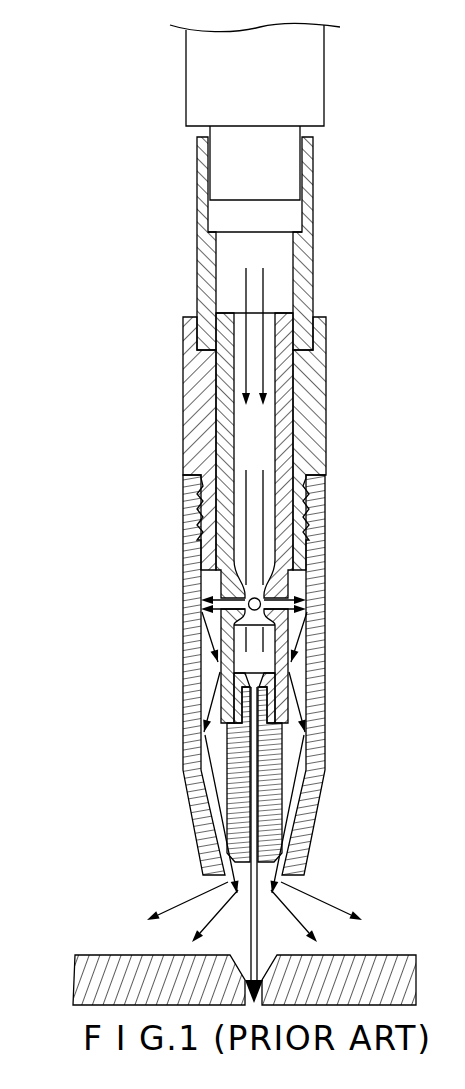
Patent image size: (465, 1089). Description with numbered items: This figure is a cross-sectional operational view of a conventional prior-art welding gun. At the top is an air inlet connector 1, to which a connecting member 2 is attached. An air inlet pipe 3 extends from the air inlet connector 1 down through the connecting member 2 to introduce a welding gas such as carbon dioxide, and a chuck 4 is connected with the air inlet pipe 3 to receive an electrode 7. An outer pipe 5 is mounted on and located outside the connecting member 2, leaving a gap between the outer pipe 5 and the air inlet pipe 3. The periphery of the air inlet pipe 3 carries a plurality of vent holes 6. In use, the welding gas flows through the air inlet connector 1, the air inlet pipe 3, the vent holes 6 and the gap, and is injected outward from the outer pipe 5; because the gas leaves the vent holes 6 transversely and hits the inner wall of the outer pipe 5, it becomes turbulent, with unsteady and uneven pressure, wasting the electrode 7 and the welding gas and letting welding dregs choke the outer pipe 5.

The air inlet connector 1 is at (197, 226).
The connecting member 2 is at (190, 379).
The air inlet pipe 3 is at (227, 454).
The chuck 4 is at (238, 740).
The outer pipe 5 is at (186, 620).
The vent holes 6 is at (221, 600).
The electrode 7 is at (252, 787).